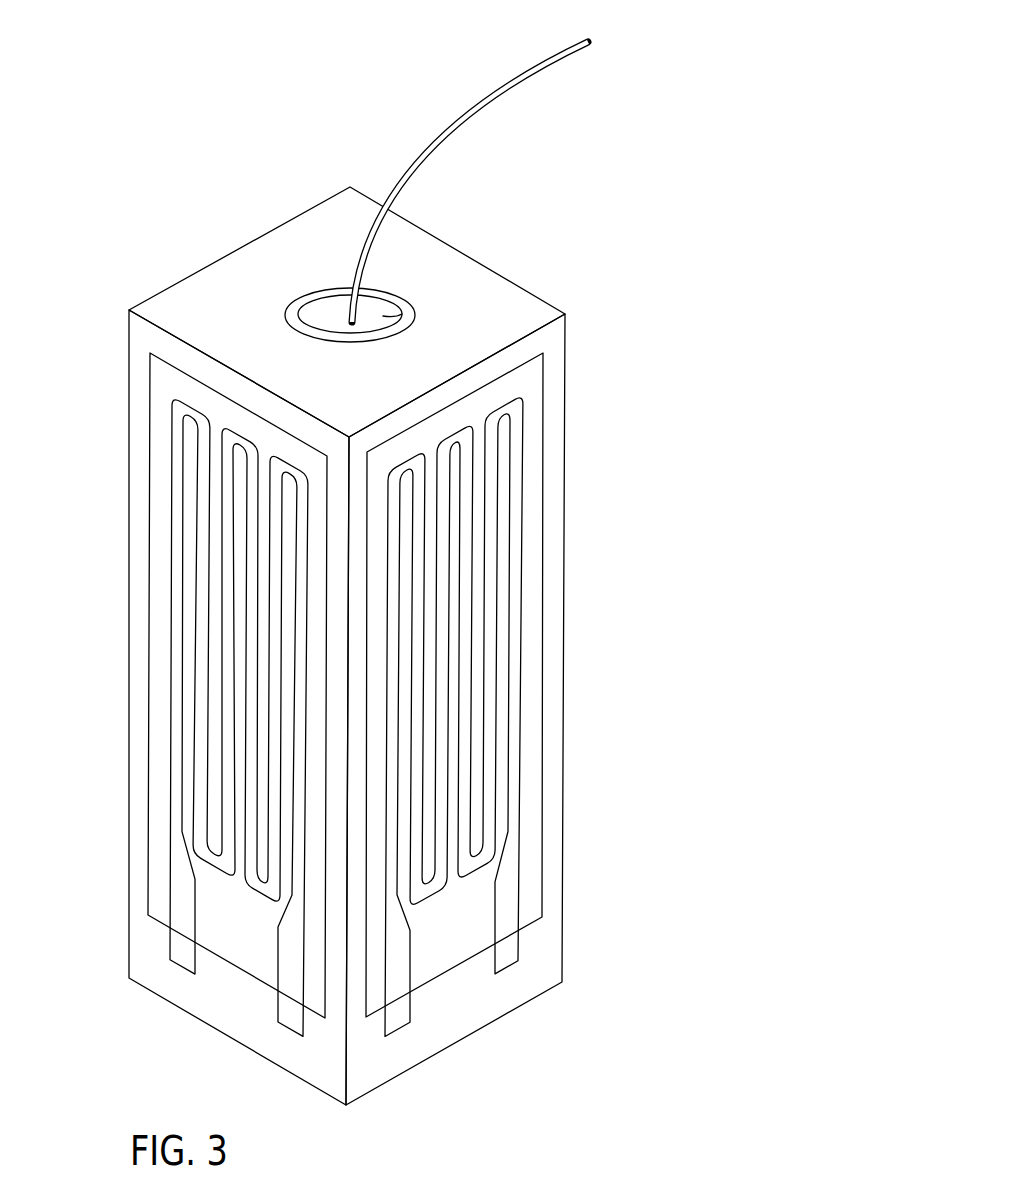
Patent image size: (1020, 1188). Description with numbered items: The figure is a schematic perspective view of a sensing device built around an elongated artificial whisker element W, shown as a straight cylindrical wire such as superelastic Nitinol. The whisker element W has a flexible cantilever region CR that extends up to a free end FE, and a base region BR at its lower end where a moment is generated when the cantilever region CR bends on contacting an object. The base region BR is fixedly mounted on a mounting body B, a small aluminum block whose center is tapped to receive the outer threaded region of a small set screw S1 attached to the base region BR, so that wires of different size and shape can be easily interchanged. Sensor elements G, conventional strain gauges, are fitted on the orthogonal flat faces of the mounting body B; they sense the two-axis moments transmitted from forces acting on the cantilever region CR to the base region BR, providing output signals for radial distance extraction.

The mounting body B is at (127, 491).
The sensor element G is at (172, 680).
The base region BR is at (348, 300).
The set screw S1 is at (383, 315).
The flexible cantilever region CR is at (458, 118).
The free end FE is at (593, 41).
The whisker element W is at (438, 167).